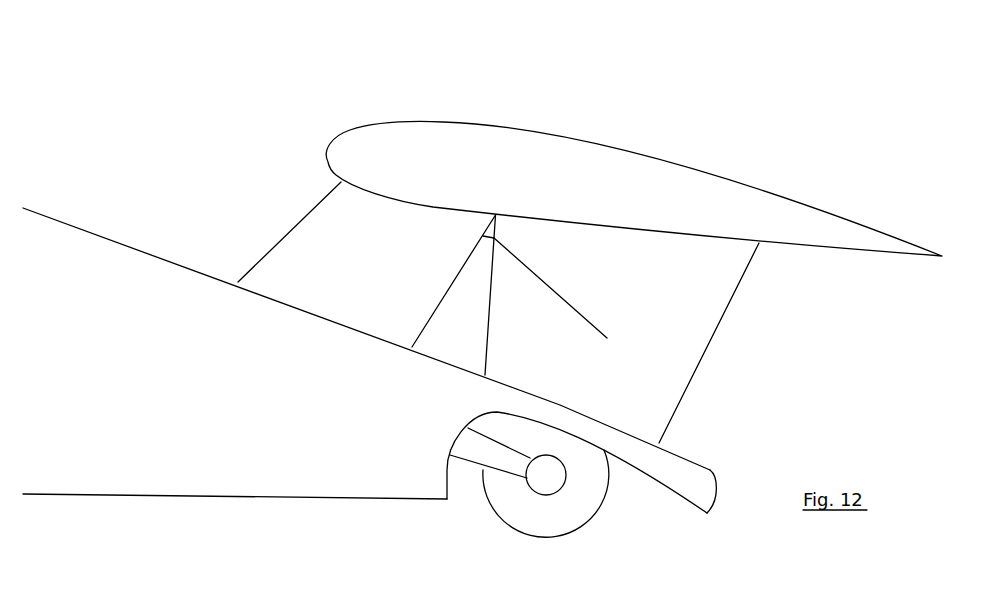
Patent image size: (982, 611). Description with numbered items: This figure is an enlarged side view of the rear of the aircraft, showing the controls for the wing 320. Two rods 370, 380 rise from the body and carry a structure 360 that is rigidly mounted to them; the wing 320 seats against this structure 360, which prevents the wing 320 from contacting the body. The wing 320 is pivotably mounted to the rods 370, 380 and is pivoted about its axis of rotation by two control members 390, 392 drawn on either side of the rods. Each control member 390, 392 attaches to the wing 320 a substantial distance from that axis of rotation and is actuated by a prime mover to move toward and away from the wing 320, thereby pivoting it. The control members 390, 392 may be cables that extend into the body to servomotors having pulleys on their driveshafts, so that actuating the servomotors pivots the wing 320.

The wing 320 is at (513, 138).
The structure 360 is at (565, 300).
The rod 370 is at (437, 305).
The rod 380 is at (488, 330).
The control member 390 is at (268, 250).
The control member 392 is at (697, 375).